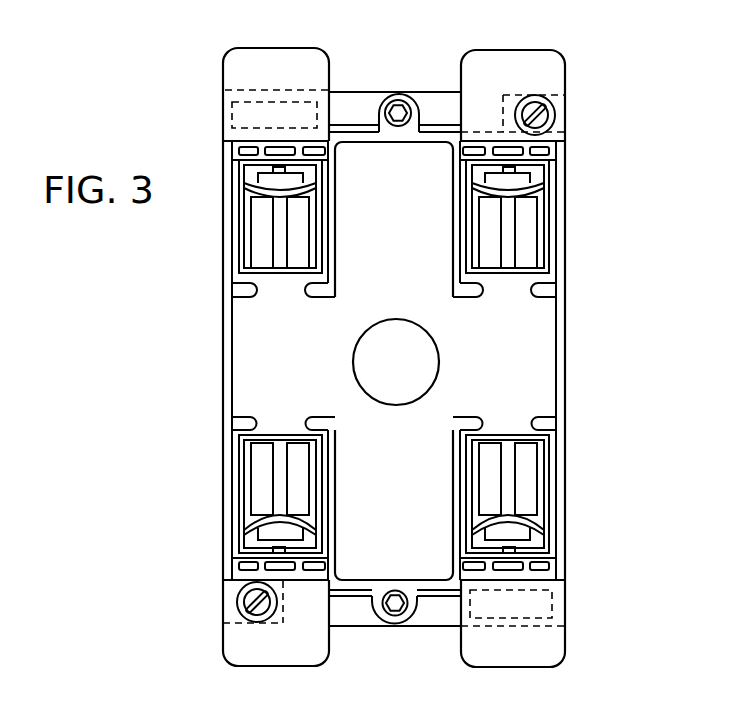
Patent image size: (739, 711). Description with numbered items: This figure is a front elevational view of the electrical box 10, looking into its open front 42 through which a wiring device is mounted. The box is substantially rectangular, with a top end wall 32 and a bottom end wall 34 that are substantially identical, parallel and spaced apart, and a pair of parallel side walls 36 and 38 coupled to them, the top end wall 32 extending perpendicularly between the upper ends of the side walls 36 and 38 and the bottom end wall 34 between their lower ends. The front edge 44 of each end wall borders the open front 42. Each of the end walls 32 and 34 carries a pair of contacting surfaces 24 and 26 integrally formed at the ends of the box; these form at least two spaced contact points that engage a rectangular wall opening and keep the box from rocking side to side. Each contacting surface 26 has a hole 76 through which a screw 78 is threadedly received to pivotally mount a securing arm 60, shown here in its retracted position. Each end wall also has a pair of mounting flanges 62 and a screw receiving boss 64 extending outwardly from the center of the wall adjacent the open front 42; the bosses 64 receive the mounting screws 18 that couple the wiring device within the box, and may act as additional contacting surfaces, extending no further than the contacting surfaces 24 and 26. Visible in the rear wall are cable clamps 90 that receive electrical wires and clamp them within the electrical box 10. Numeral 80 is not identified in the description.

The electrical box 10 is at (596, 237).
The mounting screws 18 is at (401, 126).
The contacting surface 24 is at (243, 90).
The contacting surface 26 is at (544, 98).
The top end wall 32 is at (353, 114).
The bottom end wall 34 is at (364, 608).
The side wall 36 is at (577, 288).
The side wall 38 is at (215, 275).
The open front 42 is at (543, 372).
The front edge 44 is at (442, 133).
The pivotal securing arm 60 is at (447, 92).
The mounting flanges 62 is at (304, 48).
The screw receiving boss 64 is at (381, 110).
The hole 76 is at (553, 122).
The screw 78 is at (555, 108).
The flange 80 is at (345, 92).
The cable clamps 90 is at (287, 277).